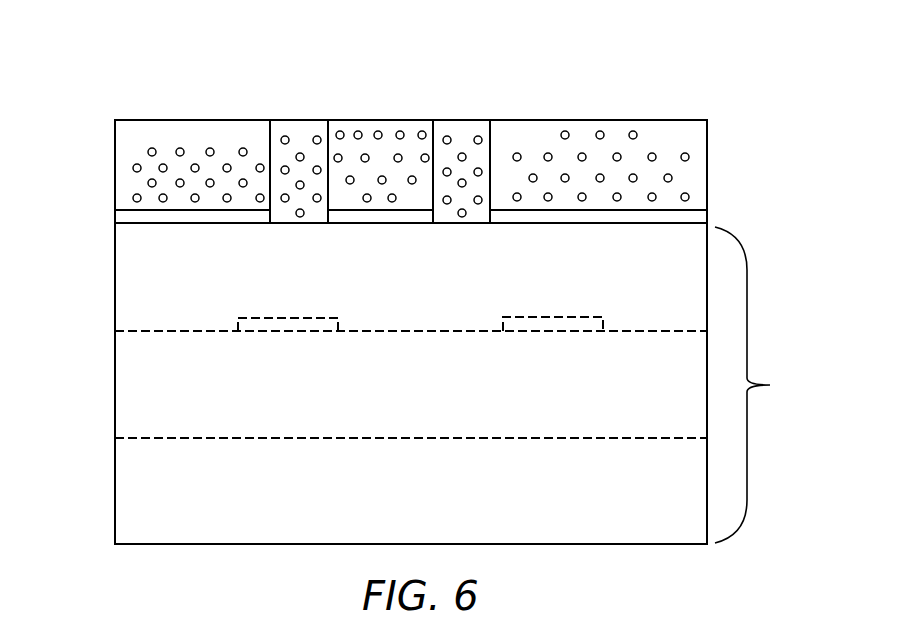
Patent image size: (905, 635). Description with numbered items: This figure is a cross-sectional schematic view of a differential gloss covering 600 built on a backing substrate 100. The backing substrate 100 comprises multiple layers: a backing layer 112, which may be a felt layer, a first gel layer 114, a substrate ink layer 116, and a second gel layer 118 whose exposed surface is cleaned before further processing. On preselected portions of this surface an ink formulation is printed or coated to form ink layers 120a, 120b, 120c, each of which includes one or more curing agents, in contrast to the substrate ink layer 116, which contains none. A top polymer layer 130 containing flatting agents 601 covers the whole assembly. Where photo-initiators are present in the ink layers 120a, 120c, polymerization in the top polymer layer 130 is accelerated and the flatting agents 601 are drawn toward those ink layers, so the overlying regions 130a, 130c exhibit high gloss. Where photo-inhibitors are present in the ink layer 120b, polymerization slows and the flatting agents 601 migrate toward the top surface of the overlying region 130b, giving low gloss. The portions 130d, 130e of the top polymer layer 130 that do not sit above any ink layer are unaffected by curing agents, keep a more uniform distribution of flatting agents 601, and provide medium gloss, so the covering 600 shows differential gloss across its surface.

The differential gloss covering 600 is at (722, 92).
The backing substrate 100 is at (468, 383).
The backing layer 112 is at (115, 478).
The first gel layer 114 is at (115, 368).
The substrate ink layer 116 is at (290, 317).
The second gel layer 118 is at (115, 270).
The ink layer 120a is at (165, 217).
The ink layer 120b is at (377, 217).
The ink layer 120c is at (570, 217).
The top polymer layer 130 is at (707, 163).
The region of top polymer layer 130a is at (150, 143).
The region of top polymer layer 130b is at (405, 120).
The region of top polymer layer 130c is at (630, 120).
The portion of top curable layer 130d is at (305, 120).
The portion of top curable layer 130e is at (470, 120).
The flatting agents 601 is at (133, 165).